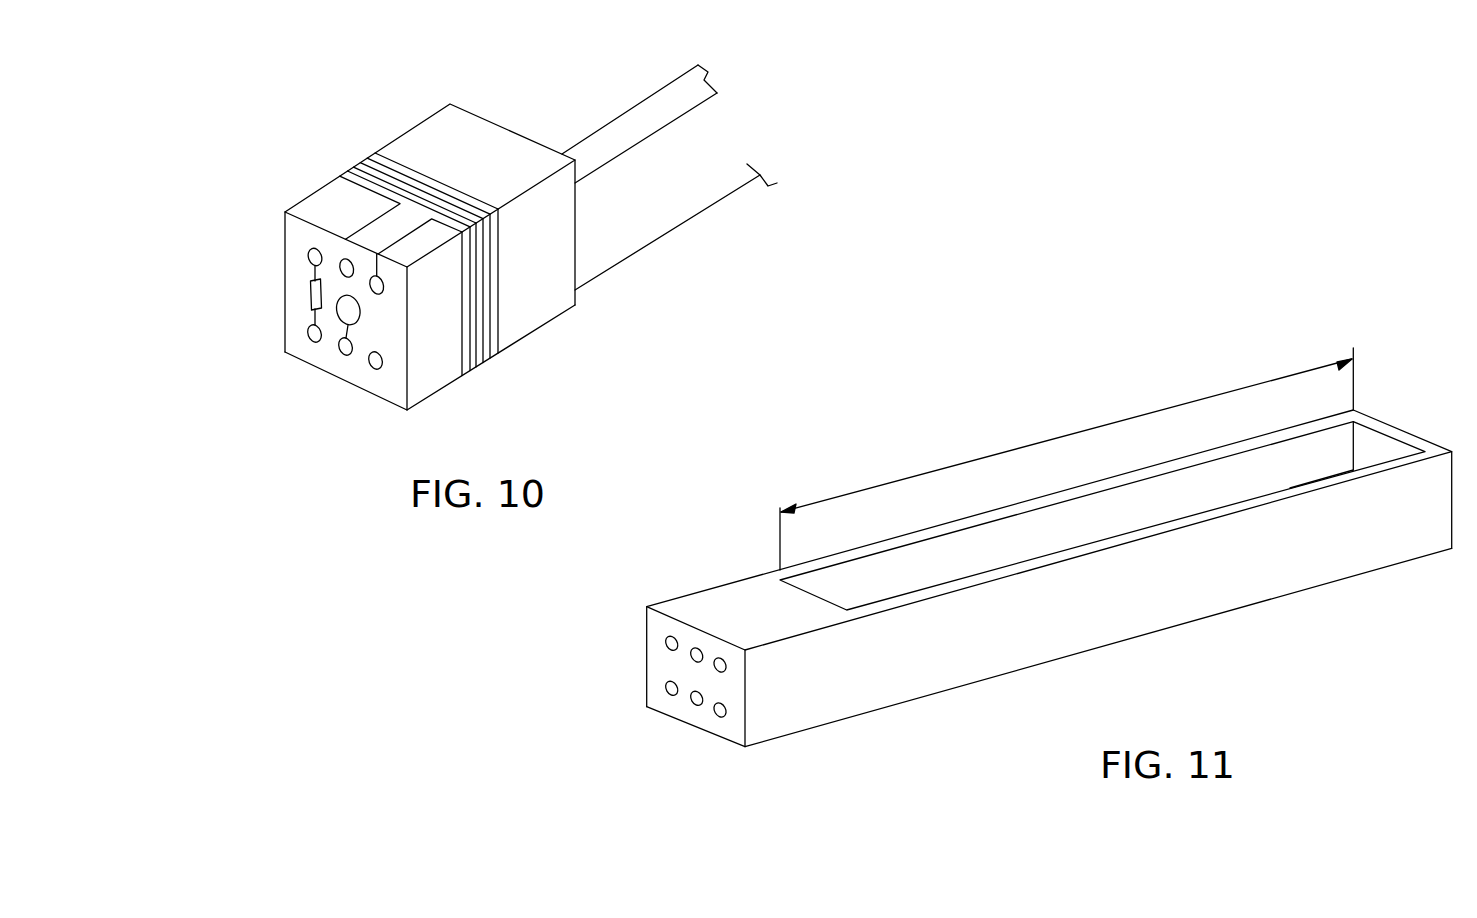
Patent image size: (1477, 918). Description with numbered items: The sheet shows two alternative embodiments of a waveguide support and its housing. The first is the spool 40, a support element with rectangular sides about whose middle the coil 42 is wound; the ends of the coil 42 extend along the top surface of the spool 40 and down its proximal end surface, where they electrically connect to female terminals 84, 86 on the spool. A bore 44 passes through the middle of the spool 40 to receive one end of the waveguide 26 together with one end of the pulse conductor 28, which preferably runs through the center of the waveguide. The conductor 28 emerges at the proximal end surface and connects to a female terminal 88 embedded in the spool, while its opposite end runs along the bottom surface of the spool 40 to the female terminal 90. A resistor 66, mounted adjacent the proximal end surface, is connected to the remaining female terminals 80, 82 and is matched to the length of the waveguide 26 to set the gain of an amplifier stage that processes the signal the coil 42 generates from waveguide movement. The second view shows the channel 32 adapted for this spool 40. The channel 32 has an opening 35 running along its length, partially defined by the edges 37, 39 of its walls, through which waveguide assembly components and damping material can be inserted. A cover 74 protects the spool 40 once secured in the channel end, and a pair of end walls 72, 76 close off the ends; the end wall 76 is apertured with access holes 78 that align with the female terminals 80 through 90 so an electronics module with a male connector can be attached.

In FIG. 10, the spool 40 is at (381, 248).
In FIG. 10, the waveguide 26 is at (610, 135).
In FIG. 10, the pulse conductor 28 is at (667, 237).
In FIG. 10, the coil 42 is at (478, 350).
In FIG. 10, the bore 44 is at (384, 284).
In FIG. 10, the resistor 66 is at (308, 294).
In FIG. 10, the female terminal 80 is at (307, 331).
In FIG. 10, the female terminal 82 is at (307, 254).
In FIG. 10, the female terminal 84 is at (346, 258).
In FIG. 10, the female terminal 86 is at (350, 293).
In FIG. 10, the female terminal 88 is at (340, 351).
In FIG. 10, the female terminal 90 is at (372, 369).
In FIG. 11, the channel 32 is at (1049, 564).
In FIG. 11, the opening 35 is at (1066, 459).
In FIG. 11, the edge 37 is at (1221, 452).
In FIG. 11, the edge 39 is at (1273, 488).
In FIG. 11, the end wall 72 is at (1393, 452).
In FIG. 11, the cover 74 is at (716, 598).
In FIG. 11, the end wall 76 is at (665, 692).
In FIG. 11, the access holes 78 is at (663, 650).